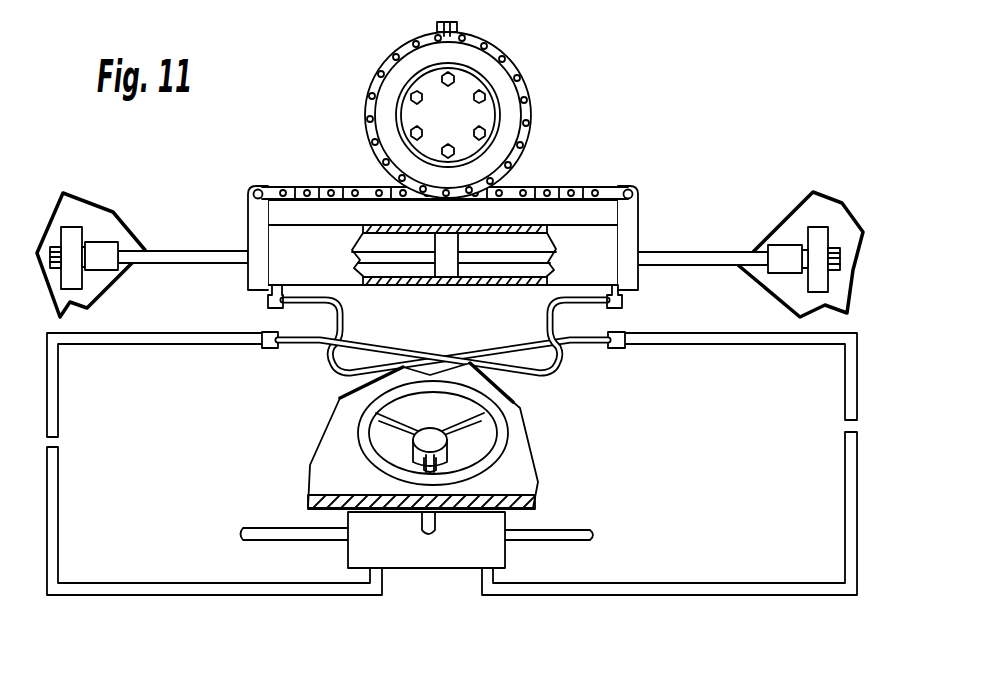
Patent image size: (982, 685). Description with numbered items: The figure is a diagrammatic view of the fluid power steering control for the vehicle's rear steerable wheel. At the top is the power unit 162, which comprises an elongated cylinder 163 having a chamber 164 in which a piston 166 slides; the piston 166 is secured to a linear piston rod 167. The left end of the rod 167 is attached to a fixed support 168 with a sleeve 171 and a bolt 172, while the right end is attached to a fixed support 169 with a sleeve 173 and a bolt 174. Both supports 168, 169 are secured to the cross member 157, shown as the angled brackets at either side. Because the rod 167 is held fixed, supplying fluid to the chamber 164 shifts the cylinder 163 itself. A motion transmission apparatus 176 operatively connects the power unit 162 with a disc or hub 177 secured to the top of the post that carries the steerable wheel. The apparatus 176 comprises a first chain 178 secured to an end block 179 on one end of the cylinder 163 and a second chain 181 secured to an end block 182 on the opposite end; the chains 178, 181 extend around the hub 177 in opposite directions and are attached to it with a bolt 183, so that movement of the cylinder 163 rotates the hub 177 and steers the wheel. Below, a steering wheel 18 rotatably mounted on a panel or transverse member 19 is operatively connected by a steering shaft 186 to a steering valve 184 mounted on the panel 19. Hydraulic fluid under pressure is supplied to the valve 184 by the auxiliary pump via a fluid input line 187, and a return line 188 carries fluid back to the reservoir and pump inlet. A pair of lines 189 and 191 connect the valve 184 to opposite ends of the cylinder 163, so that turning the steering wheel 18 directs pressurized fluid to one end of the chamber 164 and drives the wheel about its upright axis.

The steering wheel 18 is at (493, 435).
The panel or transverse member 19 is at (517, 477).
The cross member 157 is at (98, 282).
The power unit 162 is at (630, 138).
The elongated cylinder 163 is at (505, 270).
The chamber 164 is at (407, 268).
The piston 166 is at (445, 268).
The linear piston rod 167 is at (533, 257).
The fixed support 168 is at (72, 232).
The fixed support 169 is at (820, 232).
The sleeve 171 is at (108, 248).
The bolt 172 is at (52, 248).
The sleeve 173 is at (773, 250).
The bolt 174 is at (840, 258).
The motion transmission apparatus 176 is at (539, 172).
The hub 177 is at (505, 90).
The first chain 178 is at (305, 189).
The end block 179 is at (248, 213).
The second chain 181 is at (559, 190).
The end block 182 is at (633, 215).
The bolt 183 is at (458, 28).
The steering valve 184 is at (422, 562).
The steering shaft 186 is at (435, 527).
The fluid input line 187 is at (567, 532).
The return line 188 is at (260, 540).
The line 189 is at (235, 587).
The line 191 is at (632, 590).